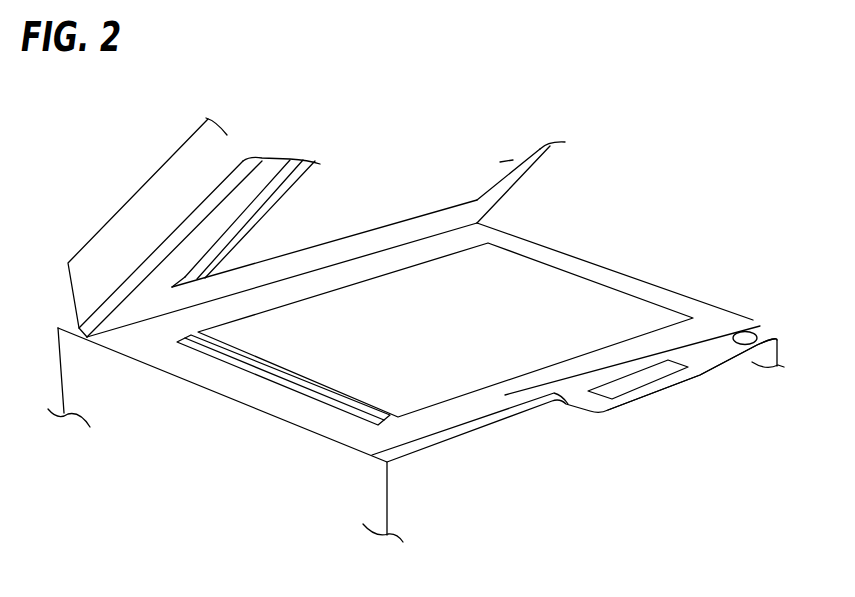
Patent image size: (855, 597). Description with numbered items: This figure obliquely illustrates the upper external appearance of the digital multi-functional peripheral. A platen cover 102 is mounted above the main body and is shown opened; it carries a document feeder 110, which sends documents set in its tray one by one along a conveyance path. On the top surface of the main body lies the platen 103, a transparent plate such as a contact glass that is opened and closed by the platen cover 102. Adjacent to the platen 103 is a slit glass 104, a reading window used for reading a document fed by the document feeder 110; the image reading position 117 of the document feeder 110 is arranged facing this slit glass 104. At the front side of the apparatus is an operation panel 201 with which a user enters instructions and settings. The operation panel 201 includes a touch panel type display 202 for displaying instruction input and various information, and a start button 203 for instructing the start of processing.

The document feeder 110 is at (452, 492).
The platen cover 102 is at (150, 213).
The platen 103 is at (517, 290).
The slit glass 104 is at (328, 401).
The image reading position 117 is at (187, 276).
The operation panel 201 is at (716, 356).
The touch panel type display 202 is at (630, 383).
The start button 203 is at (745, 331).